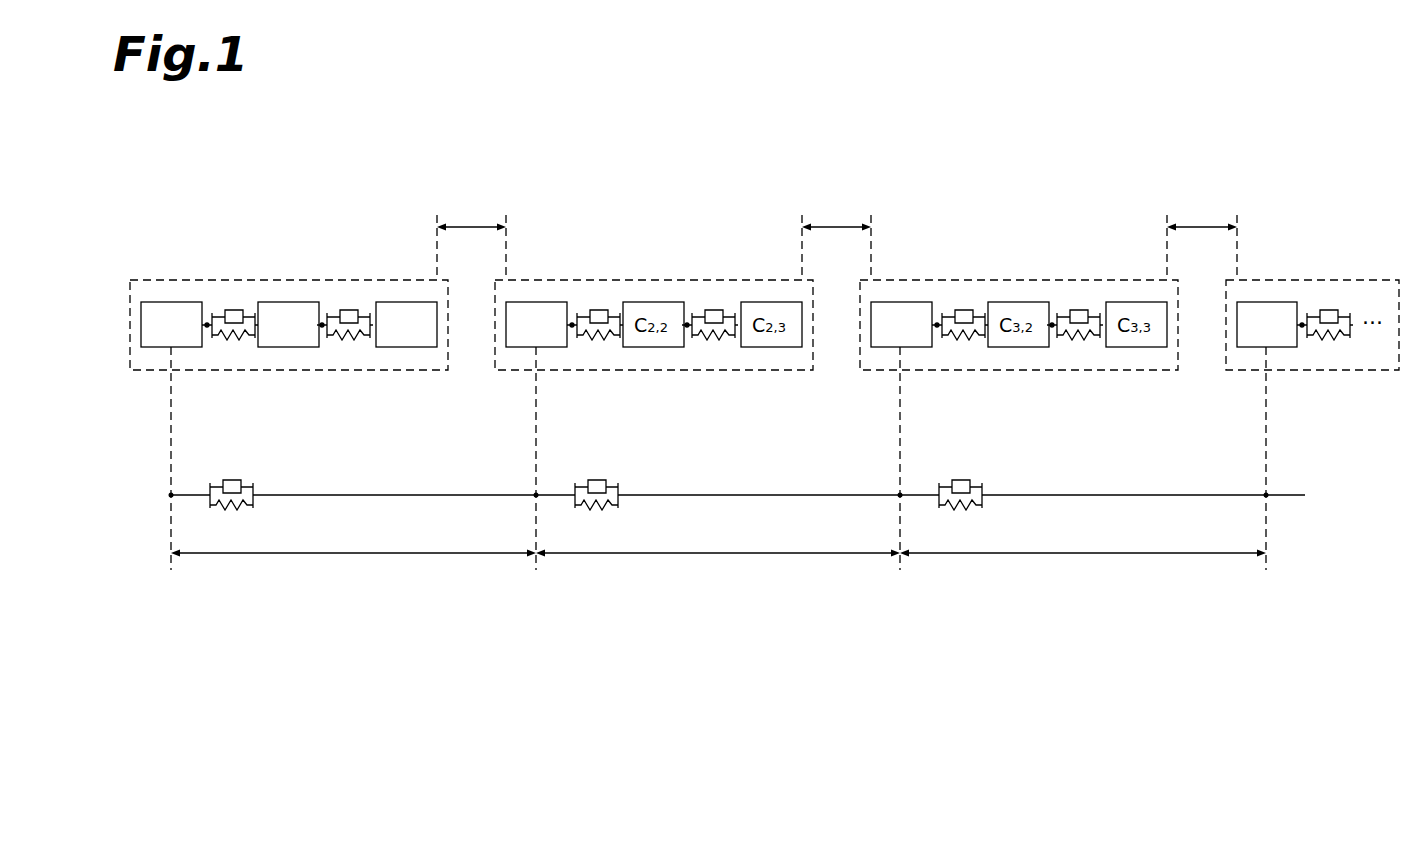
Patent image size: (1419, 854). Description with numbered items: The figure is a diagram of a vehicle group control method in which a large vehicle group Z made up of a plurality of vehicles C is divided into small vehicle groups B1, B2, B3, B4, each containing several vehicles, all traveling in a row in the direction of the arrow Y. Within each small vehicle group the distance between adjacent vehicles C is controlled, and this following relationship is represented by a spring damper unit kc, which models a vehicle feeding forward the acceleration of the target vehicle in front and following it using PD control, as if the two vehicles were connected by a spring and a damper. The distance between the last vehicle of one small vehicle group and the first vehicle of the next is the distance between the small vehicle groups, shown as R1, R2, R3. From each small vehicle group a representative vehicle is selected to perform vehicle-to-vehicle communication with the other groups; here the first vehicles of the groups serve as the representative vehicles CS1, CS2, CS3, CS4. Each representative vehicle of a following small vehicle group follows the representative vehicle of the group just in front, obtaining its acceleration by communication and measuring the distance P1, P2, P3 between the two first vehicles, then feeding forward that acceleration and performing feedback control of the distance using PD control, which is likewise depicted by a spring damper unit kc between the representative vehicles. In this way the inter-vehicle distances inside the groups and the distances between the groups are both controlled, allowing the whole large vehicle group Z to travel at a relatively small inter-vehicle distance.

The large vehicle group Z is at (1160, 130).
The arrow indicating traveling direction Y is at (123, 327).
The first small vehicle group B1 is at (222, 280).
The second small vehicle group B2 is at (598, 280).
The third small vehicle group B3 is at (973, 280).
The fourth small vehicle group B4 is at (1318, 280).
The representative vehicle of first small vehicle group CS1 is at (167, 302).
The representative vehicle of second small vehicle group CS2 is at (535, 302).
The representative vehicle of third small vehicle group CS3 is at (900, 302).
The representative vehicle of fourth small vehicle group CS4 is at (1268, 302).
The vehicle C is at (276, 302).
The spring damper unit kc is at (216, 345).
The distance between first and second small vehicle groups R1 is at (471, 239).
The distance between second and third small vehicle groups R2 is at (836, 239).
The distance between third and fourth small vehicle groups R3 is at (1202, 239).
The distance between first vehicles of first and second small vehicle groups P1 is at (353, 570).
The distance between first vehicles of second and third small vehicle groups P2 is at (718, 570).
The distance between first vehicles of third and fourth small vehicle groups P3 is at (1083, 570).